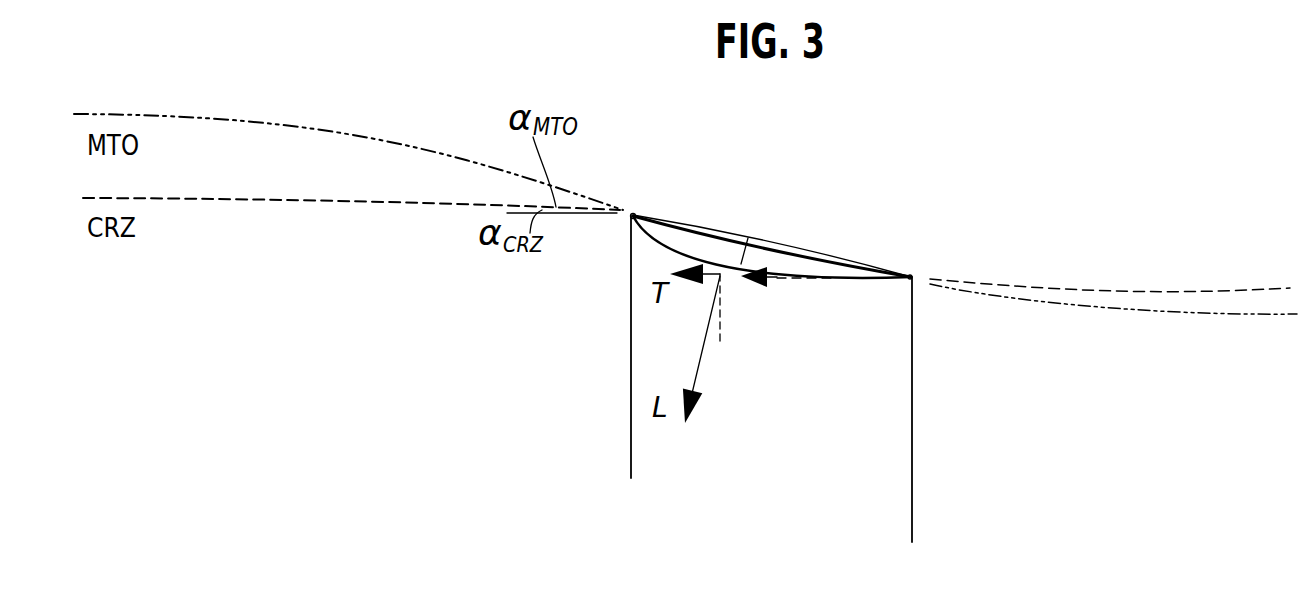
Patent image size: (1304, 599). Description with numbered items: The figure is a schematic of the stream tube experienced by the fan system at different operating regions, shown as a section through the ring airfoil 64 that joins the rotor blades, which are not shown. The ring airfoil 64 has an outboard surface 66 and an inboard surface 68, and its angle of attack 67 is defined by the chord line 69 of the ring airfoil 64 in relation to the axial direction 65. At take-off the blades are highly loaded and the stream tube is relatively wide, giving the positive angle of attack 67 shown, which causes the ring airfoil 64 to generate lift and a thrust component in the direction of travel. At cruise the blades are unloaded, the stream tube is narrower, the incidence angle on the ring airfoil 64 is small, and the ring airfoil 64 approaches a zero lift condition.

The ring airfoil 64 is at (804, 332).
The axial direction 65 is at (780, 280).
The outboard surface 66 is at (857, 263).
The angle of attack 67 is at (743, 264).
The inboard surface 68 is at (807, 281).
The chord line 69 is at (688, 221).